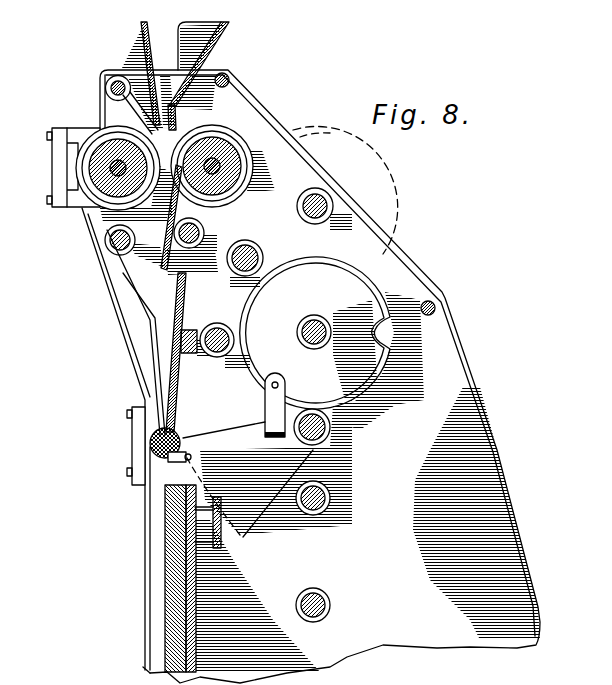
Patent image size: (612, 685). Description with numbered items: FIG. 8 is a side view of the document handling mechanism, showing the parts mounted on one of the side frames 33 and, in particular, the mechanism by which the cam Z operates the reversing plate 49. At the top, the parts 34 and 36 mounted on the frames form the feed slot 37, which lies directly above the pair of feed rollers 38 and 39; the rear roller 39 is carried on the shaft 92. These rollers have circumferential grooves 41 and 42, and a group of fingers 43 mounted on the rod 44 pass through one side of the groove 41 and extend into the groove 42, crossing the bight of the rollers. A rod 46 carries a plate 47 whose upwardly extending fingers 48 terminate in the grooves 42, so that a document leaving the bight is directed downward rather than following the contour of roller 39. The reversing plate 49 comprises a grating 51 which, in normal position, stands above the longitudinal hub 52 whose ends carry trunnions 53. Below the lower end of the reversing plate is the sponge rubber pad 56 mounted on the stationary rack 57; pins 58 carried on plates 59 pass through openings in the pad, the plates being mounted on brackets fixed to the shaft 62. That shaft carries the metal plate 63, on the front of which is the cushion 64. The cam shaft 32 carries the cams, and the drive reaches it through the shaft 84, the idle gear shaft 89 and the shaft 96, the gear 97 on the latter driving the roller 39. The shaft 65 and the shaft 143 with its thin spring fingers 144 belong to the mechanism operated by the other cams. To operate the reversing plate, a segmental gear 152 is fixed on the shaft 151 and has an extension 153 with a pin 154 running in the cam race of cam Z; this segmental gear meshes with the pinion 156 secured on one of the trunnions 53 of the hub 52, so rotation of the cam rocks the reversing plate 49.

The cam shaft 32 is at (321, 322).
The side frame 33 is at (497, 450).
The feed slot part 34 is at (219, 37).
The feed slot part 36 is at (140, 40).
The feed slot 37 is at (163, 134).
The feed roller 38 is at (83, 210).
The feed roller 39 is at (240, 132).
The circumferential groove 41 is at (88, 188).
The circumferential groove 42 is at (242, 153).
The fingers 43 is at (127, 107).
The rod 44 is at (110, 88).
The rod 46 is at (200, 232).
The plate 47 is at (156, 219).
The fingers 48 is at (155, 212).
The reversing plate 49 is at (173, 365).
The grating 51 is at (184, 313).
The longitudinal hub 52 is at (152, 463).
The trunnion 53 is at (170, 459).
The pad 56 is at (168, 597).
The rack 57 is at (197, 572).
The pins 58 is at (166, 545).
The plate 59 is at (218, 545).
The shaft 62 is at (218, 326).
The metal plate 63 is at (192, 354).
The cushion 64 is at (178, 342).
The shaft 65 is at (257, 255).
The shaft 84 is at (333, 598).
The shaft 89 is at (333, 498).
The shaft 92 is at (213, 158).
The shaft 96 is at (323, 200).
The gear 97 is at (366, 171).
The shaft 143 is at (113, 233).
The spring fingers 144 is at (127, 305).
The shaft 151 is at (346, 448).
The segmental gear 152 is at (228, 432).
The extension 153 is at (284, 382).
The pin 154 is at (275, 381).
The pinion 156 is at (171, 430).